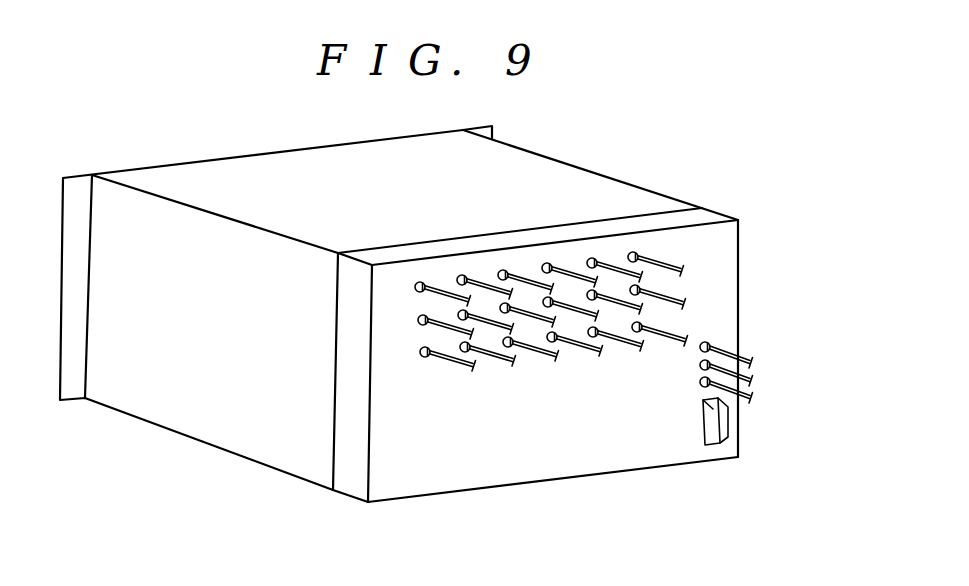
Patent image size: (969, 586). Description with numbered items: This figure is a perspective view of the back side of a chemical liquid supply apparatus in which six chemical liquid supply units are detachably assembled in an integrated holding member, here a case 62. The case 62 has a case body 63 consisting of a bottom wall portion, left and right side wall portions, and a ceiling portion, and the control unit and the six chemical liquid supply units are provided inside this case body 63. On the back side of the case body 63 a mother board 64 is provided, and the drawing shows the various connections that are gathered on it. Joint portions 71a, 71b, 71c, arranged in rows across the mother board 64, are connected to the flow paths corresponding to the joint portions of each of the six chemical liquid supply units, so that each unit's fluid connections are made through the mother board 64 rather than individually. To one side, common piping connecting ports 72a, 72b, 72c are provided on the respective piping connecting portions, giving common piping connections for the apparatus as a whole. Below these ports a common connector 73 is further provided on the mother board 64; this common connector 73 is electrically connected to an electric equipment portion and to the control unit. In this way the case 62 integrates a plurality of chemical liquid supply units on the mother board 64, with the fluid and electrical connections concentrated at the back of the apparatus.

The case 62 is at (589, 194).
The case body 63 is at (223, 437).
The mother board 64 is at (470, 477).
The joint portion 71a is at (417, 320).
The joint portion 71b is at (423, 283).
The joint portion 71c is at (424, 357).
The common piping connecting port 72a is at (710, 344).
The common piping connecting port 72b is at (712, 363).
The common piping connecting port 72c is at (707, 385).
The common connector 73 is at (725, 437).